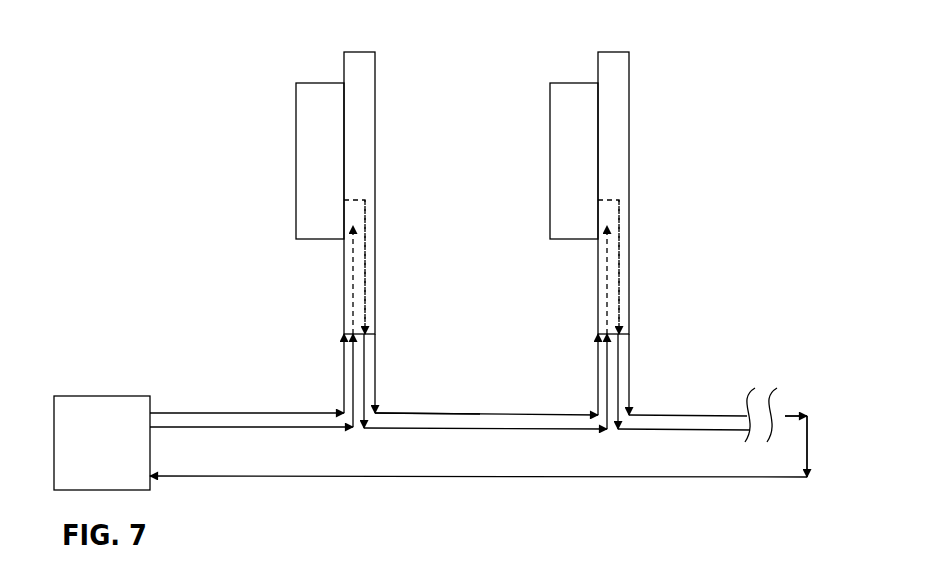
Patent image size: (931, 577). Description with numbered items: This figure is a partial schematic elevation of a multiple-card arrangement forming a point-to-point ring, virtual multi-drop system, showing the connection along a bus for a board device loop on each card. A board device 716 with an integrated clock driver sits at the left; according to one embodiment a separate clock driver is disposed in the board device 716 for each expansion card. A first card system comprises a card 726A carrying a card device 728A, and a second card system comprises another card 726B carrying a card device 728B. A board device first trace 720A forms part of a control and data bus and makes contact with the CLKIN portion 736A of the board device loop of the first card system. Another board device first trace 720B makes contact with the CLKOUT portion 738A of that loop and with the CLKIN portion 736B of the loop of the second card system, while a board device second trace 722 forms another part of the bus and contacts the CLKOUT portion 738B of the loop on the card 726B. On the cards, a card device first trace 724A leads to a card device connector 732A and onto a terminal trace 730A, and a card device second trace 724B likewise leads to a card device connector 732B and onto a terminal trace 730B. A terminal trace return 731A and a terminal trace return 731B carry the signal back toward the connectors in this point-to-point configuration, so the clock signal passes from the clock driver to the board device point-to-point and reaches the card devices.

The board device 716 is at (71, 410).
The board device first trace 720A is at (177, 411).
The board device first trace 720B is at (527, 412).
The board device second trace 722 is at (268, 440).
The card device first trace 724A is at (222, 427).
The card device second trace 724B is at (480, 412).
The card 726A is at (361, 178).
The card 726B is at (613, 178).
The card device 728A is at (313, 155).
The card device 728B is at (566, 153).
The terminal trace 730A is at (344, 296).
The terminal trace 730B is at (598, 296).
The terminal trace return 731A is at (360, 257).
The terminal trace return 731B is at (615, 260).
The card device connector 732A is at (376, 384).
The card device connector 732B is at (630, 385).
The CLKIN portion 736A is at (343, 380).
The CLKIN portion 736B is at (597, 382).
The CLKOUT portion 738A is at (374, 352).
The CLKOUT portion 738B is at (628, 352).